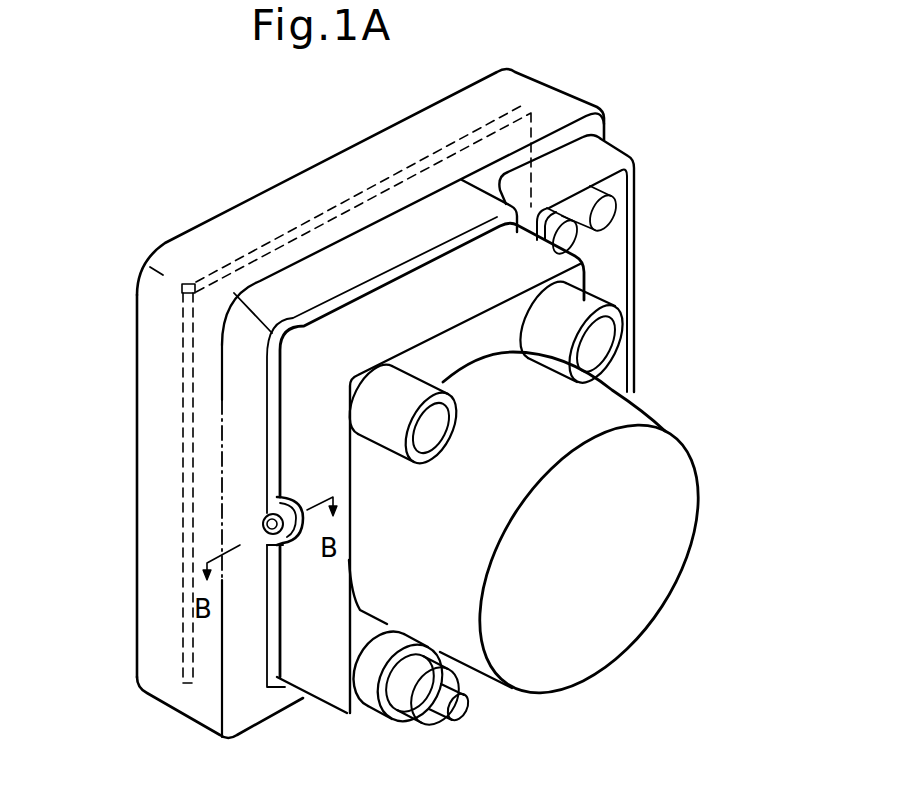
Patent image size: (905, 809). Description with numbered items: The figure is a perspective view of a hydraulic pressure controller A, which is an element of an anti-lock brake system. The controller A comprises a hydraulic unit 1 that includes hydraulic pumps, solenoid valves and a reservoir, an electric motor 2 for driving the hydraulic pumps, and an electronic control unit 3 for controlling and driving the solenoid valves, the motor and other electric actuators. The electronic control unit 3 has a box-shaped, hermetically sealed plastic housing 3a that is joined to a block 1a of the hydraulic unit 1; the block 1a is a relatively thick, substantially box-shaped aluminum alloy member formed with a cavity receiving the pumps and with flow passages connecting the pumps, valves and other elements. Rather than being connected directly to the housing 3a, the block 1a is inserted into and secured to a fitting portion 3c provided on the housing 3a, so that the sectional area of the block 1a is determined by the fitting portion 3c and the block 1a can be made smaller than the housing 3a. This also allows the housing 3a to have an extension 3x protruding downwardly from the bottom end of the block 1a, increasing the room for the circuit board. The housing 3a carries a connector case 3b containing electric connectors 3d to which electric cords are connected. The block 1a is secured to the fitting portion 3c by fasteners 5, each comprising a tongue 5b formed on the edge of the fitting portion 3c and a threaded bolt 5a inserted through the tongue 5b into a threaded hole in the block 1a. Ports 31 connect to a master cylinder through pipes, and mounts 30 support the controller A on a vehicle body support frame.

The hydraulic pressure controller A is at (228, 168).
The hydraulic unit 1 is at (580, 250).
The block 1a is at (412, 322).
The electric motor 2 is at (682, 442).
The electronic control unit 3 is at (602, 97).
The housing 3a is at (157, 423).
The connector case 3b is at (607, 160).
The fitting portion 3c is at (237, 511).
The electric connectors 3d is at (615, 213).
The extension 3x is at (253, 710).
The fastener 5 is at (292, 493).
The threaded bolt 5a is at (265, 520).
The tongue 5b is at (292, 540).
The mount 30 is at (371, 685).
The port 31 is at (633, 342).